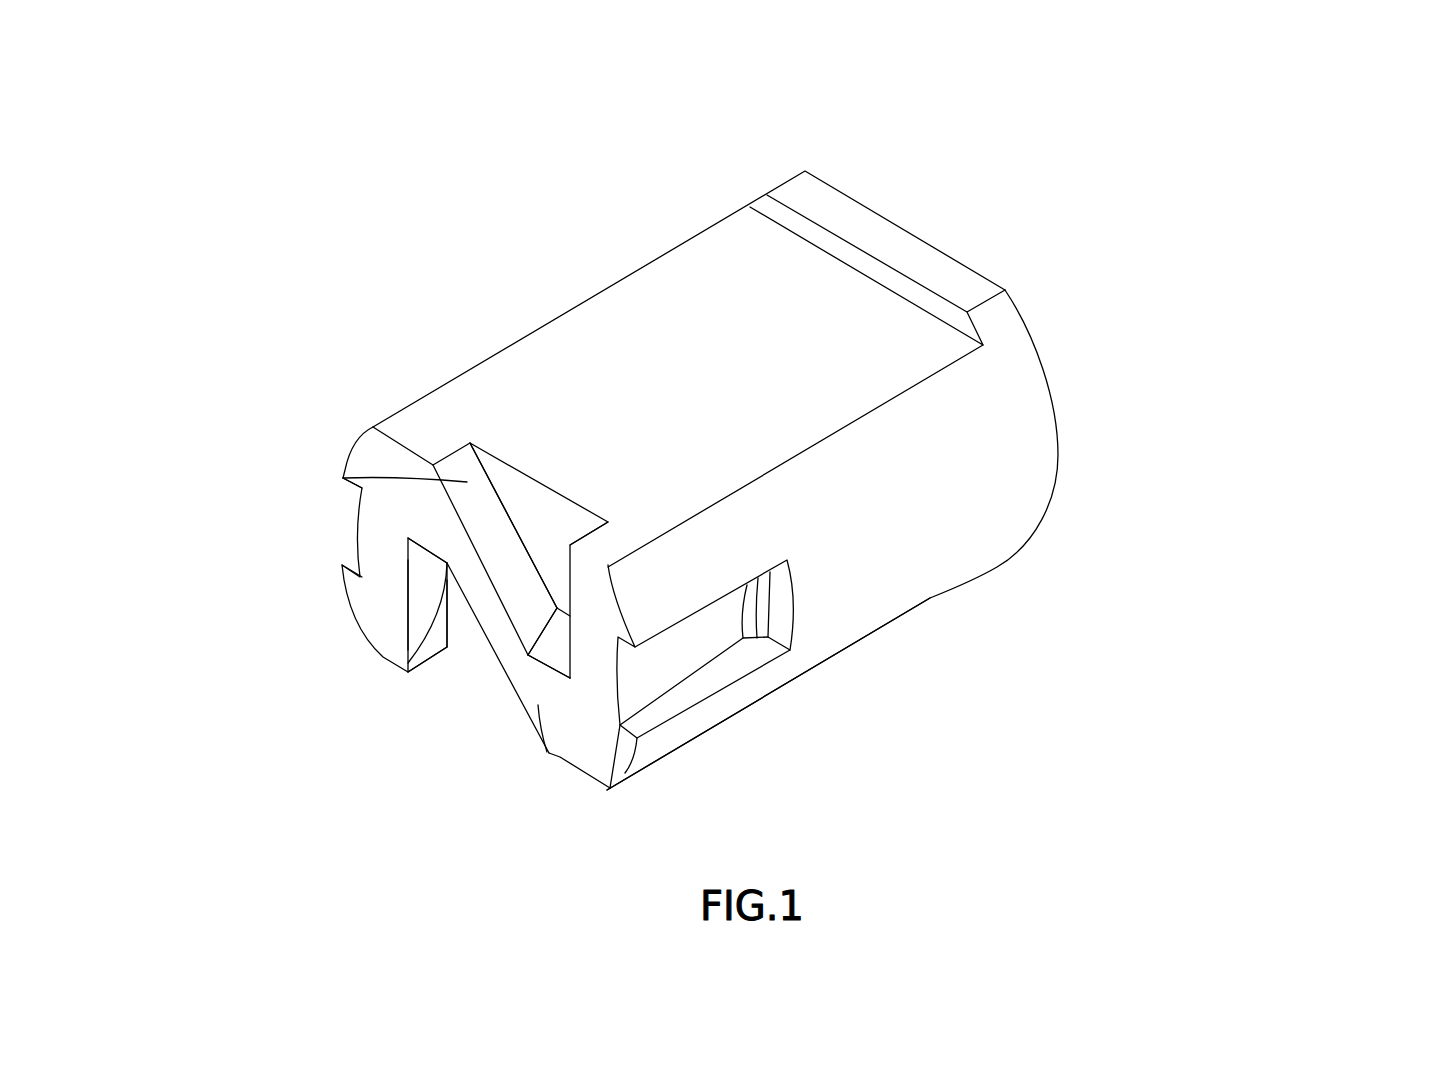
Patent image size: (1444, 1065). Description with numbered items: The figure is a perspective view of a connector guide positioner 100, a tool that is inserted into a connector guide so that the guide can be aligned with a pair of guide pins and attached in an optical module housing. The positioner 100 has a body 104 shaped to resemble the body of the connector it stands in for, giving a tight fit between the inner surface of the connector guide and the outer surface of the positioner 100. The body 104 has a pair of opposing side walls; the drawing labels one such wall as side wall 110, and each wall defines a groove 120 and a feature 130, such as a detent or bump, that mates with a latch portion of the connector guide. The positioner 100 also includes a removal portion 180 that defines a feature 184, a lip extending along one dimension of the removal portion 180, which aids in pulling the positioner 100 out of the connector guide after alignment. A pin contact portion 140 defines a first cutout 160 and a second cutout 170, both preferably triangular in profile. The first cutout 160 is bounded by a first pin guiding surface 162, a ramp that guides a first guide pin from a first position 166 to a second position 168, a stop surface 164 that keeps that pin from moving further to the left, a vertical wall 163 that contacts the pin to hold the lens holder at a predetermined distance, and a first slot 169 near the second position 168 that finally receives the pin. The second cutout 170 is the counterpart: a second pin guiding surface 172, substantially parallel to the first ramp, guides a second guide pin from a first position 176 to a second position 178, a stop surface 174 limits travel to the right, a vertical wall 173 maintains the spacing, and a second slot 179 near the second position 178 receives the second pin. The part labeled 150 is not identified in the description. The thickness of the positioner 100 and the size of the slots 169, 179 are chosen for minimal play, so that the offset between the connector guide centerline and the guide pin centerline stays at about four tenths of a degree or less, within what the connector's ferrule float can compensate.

The connector guide positioner 100 is at (210, 158).
The body 104 is at (727, 255).
The feature to aid in removal 184 is at (1016, 281).
The removal portion 180 is at (1033, 393).
The pin contact portion 140 is at (350, 452).
The first position 176 is at (343, 478).
The vertical wall 173 is at (525, 503).
The second cutout 170 is at (520, 492).
The second pin guiding surface 172 is at (468, 482).
The stop surface 174 is at (570, 588).
The first cutout 160 is at (408, 672).
The first slot 169 is at (438, 570).
The stop surface 164 is at (423, 607).
The second position 168 is at (453, 632).
The vertical wall 163 is at (473, 648).
The second slot 179 is at (472, 648).
The first pin guiding surface 162 is at (558, 624).
The first position 166 is at (517, 712).
The bottom lug 150 is at (540, 715).
The second position 178 is at (557, 650).
The groove 120 is at (662, 672).
The feature for mating with connector guide 130 is at (757, 589).
The body bottom 110 is at (703, 718).